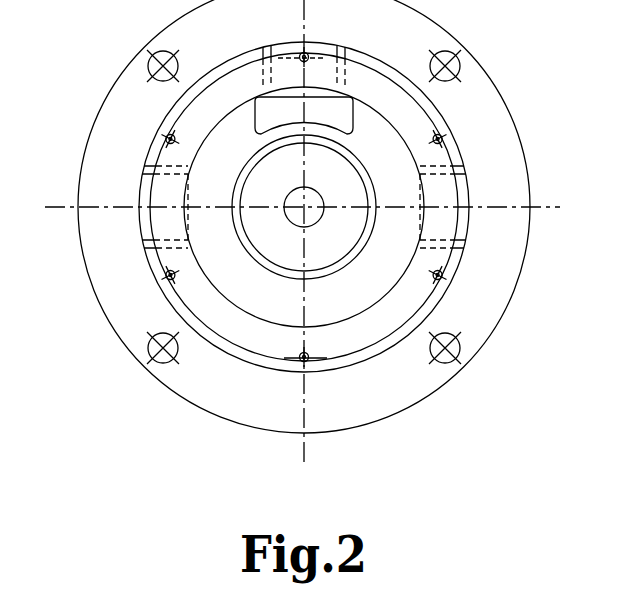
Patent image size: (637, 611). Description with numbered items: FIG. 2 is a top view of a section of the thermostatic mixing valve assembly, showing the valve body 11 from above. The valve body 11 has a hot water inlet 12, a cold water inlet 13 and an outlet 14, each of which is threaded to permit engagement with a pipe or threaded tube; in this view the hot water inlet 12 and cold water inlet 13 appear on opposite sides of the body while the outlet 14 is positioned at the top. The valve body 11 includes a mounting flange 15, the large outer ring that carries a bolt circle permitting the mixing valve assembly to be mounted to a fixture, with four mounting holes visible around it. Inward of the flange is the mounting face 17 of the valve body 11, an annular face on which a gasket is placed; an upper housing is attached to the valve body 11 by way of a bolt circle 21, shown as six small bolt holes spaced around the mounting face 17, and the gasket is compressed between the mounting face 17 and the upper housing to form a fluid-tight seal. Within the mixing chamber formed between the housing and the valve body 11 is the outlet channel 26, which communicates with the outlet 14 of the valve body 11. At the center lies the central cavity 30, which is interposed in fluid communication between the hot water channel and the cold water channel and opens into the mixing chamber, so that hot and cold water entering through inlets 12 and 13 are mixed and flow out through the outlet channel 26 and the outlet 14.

The valve body 11 is at (428, 396).
The hot water inlet 12 is at (138, 208).
The cold water inlet 13 is at (470, 208).
The outlet 14 is at (302, 44).
The mounting flange 15 is at (261, 416).
The mounting face 17 is at (304, 207).
The bolt circle 21 is at (307, 54).
The outlet channel 26 is at (304, 207).
The central cavity 30 is at (304, 225).